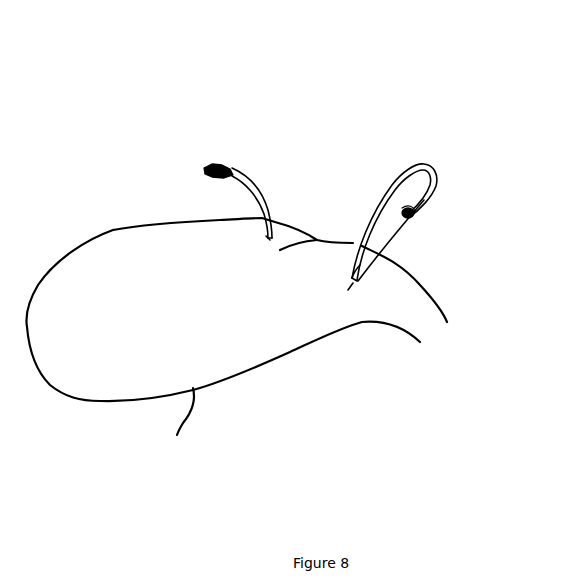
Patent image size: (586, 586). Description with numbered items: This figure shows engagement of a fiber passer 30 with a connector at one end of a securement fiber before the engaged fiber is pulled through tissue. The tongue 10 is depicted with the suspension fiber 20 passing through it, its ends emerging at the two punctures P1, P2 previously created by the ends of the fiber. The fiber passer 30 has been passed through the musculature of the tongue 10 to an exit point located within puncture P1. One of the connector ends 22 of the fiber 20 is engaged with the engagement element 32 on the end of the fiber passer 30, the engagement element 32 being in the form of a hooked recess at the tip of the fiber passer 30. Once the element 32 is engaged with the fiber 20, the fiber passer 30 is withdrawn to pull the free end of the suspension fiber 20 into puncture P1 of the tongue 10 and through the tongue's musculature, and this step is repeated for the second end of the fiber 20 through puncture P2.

The tongue 10 is at (108, 222).
The suspension fiber 20 is at (272, 185).
The connector end 22 is at (222, 156).
The fiber passer 30 is at (376, 278).
The engagement element 32 is at (419, 230).
The puncture P1 is at (338, 297).
The puncture P2 is at (254, 244).